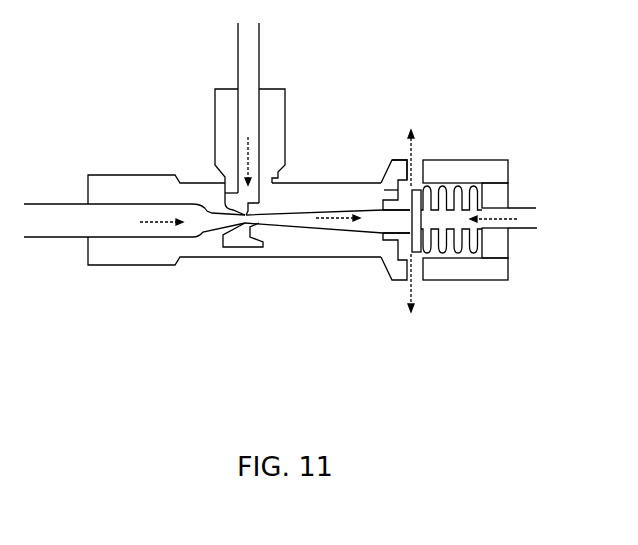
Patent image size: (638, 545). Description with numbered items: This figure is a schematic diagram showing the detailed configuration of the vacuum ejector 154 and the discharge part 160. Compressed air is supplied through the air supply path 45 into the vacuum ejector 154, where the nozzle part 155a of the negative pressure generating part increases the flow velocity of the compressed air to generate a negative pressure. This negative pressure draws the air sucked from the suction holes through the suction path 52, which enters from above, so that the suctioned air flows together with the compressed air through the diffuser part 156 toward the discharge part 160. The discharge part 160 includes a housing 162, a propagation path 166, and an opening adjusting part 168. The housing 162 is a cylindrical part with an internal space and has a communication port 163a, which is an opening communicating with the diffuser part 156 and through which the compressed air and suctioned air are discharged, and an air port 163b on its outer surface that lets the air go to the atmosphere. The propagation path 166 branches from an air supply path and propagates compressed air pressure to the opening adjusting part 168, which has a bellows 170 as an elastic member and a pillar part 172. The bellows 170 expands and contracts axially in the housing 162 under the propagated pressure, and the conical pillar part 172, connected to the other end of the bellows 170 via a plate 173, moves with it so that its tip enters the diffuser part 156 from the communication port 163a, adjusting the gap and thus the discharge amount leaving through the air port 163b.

The suction path 52 is at (260, 62).
The vacuum ejector 154 is at (118, 183).
The nozzle part 155a is at (197, 200).
The diffuser part 156 is at (340, 210).
The discharge part 160 is at (396, 302).
The housing 162 is at (484, 160).
The communication port 163a is at (376, 218).
The air port 163b is at (418, 219).
The propagation path 166 is at (525, 235).
The opening adjusting part 168 is at (444, 258).
The bellows 170 is at (445, 260).
The pillar part 172 is at (392, 198).
The plate 173 is at (408, 168).
The air supply path 45 is at (50, 237).